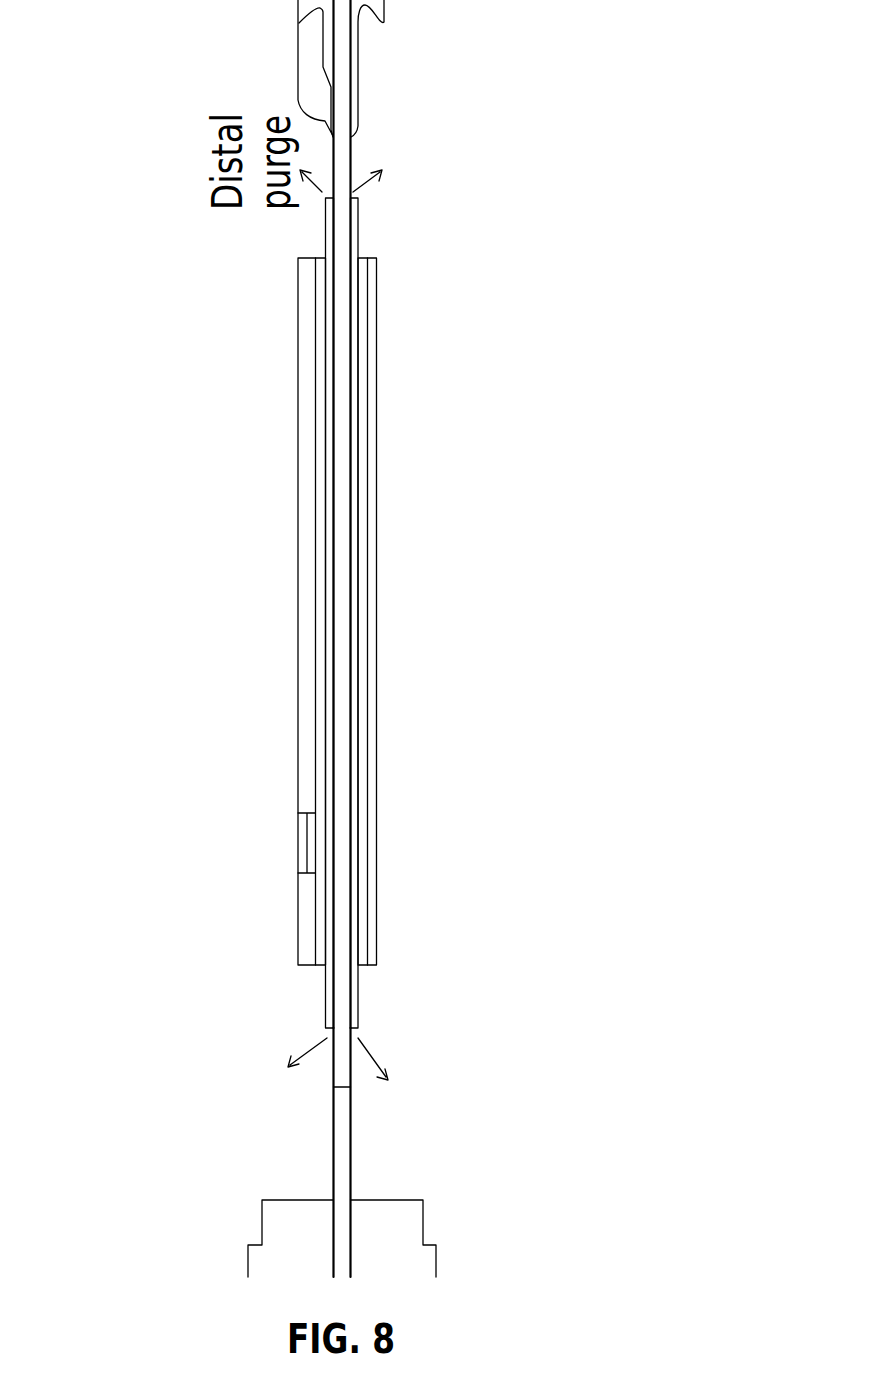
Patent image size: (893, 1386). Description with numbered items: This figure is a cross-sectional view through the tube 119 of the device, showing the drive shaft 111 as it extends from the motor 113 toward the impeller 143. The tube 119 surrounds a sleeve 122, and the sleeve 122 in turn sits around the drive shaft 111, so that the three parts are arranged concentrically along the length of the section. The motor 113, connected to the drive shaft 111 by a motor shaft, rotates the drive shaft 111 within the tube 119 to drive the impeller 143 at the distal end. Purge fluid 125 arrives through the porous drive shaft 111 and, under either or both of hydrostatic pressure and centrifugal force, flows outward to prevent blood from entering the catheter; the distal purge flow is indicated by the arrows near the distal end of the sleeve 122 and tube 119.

The impeller 143 is at (299, 24).
The purge fluid 125 is at (350, 442).
The tube 119 is at (375, 773).
The sleeve 122 is at (360, 987).
The drive shaft 111 is at (353, 1035).
The motor 113 is at (263, 1218).